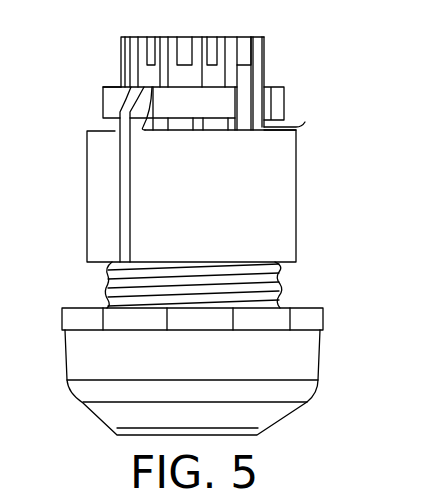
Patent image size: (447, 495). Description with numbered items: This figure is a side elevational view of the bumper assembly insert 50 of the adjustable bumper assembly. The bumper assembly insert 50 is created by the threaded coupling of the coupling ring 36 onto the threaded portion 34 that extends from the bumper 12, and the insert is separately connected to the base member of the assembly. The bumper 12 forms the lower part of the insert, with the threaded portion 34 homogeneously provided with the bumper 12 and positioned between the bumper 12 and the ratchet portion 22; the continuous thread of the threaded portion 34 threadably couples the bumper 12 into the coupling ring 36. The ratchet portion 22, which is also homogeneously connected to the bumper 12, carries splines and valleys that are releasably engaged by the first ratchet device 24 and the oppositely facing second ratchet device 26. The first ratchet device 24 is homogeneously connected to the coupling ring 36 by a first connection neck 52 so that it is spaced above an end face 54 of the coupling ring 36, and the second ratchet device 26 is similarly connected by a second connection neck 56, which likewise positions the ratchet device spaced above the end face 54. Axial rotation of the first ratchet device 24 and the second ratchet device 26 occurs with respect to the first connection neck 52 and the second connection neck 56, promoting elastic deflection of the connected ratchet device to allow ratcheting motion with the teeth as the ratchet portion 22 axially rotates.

The bumper assembly insert 50 is at (337, 101).
The ratchet portion 22 is at (244, 37).
The first ratchet device 24 is at (105, 100).
The second ratchet device 26 is at (277, 85).
The first connection neck 52 is at (108, 114).
The second connection neck 56 is at (303, 128).
The coupling ring 36 is at (88, 203).
The end face 54 is at (270, 133).
The threaded portion 34 is at (282, 283).
The bumper 12 is at (80, 357).